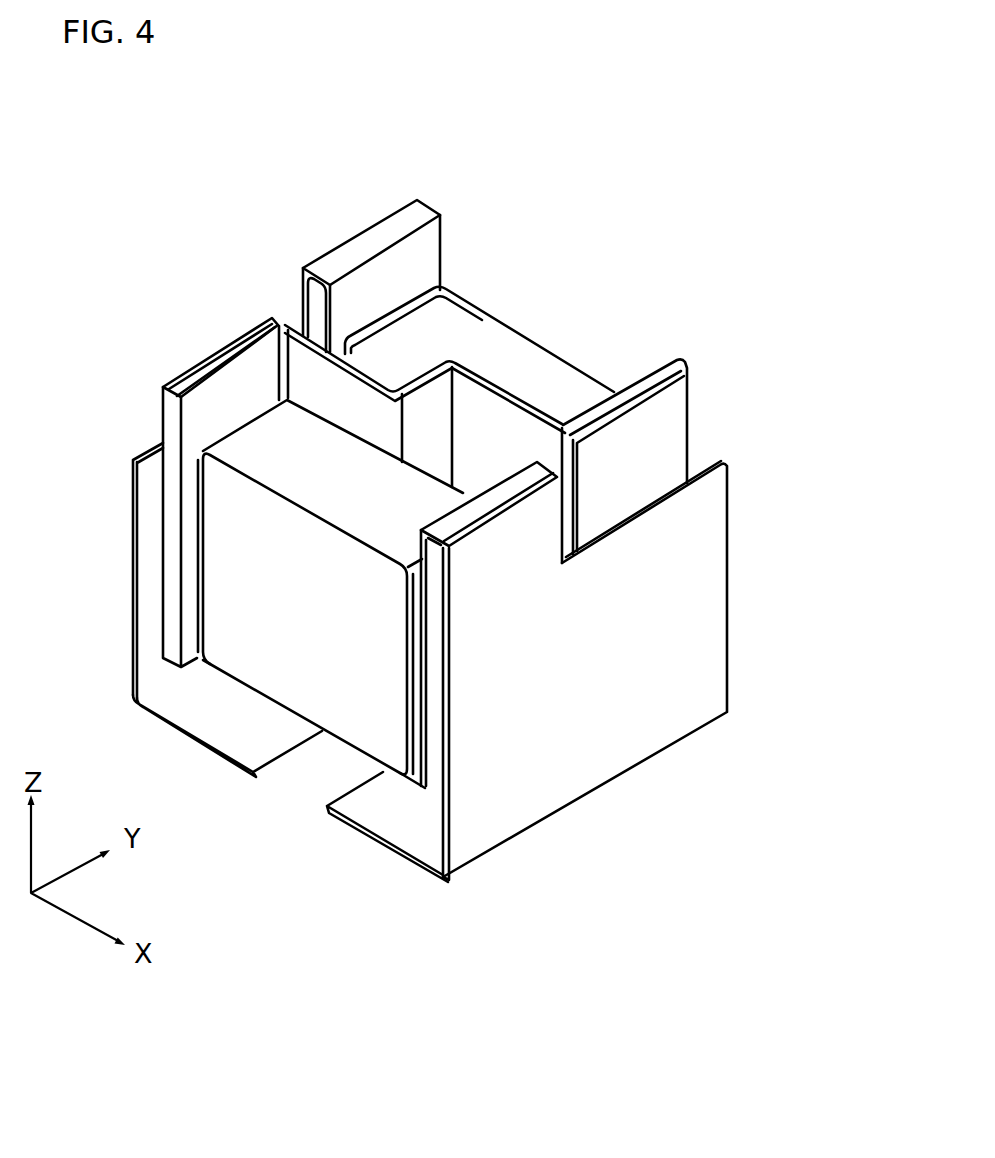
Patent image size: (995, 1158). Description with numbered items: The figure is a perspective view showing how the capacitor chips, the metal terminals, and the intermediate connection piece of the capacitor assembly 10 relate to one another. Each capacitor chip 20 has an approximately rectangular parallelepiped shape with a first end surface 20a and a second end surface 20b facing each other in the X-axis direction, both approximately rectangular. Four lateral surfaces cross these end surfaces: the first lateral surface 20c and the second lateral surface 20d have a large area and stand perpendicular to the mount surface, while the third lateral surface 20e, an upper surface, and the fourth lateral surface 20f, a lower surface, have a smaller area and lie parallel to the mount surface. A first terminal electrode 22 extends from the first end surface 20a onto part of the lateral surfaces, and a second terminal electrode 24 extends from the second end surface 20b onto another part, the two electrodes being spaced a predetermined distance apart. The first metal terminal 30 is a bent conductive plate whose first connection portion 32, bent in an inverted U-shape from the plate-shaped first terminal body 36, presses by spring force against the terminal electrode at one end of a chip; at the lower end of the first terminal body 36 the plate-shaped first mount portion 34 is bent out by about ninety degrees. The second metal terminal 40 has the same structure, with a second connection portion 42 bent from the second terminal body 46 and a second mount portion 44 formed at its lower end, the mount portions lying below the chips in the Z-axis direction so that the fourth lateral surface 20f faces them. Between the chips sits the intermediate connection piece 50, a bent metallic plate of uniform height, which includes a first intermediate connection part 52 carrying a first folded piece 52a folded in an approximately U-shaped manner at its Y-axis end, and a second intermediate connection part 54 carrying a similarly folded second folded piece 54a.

The capacitor assembly 10 is at (523, 255).
The capacitor chip 20 is at (524, 348).
The first end surface 20a is at (197, 547).
The second end surface 20b is at (413, 717).
The first lateral surface 20c is at (240, 615).
The second lateral surface 20d is at (465, 493).
The third lateral surface 20e is at (277, 427).
The fourth lateral surface 20f is at (253, 697).
The first terminal electrode 22 is at (400, 288).
The second terminal electrode 24 is at (413, 750).
The first metal terminal 30 is at (342, 243).
The first connection portion 32 is at (428, 252).
The first mount portion 34 is at (193, 721).
The first terminal body 36 is at (133, 458).
The second metal terminal 40 is at (690, 617).
The second connection portion 42 is at (411, 650).
The second mount portion 44 is at (383, 830).
The second terminal body 46 is at (647, 707).
The intermediate connection piece 50 is at (533, 402).
The first intermediate connection part 52 is at (640, 372).
The first folded piece 52a is at (647, 423).
The second intermediate connection part 54 is at (202, 413).
The second folded piece 54a is at (200, 357).